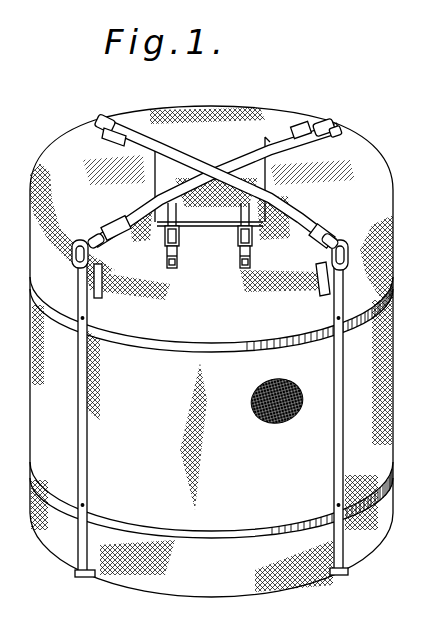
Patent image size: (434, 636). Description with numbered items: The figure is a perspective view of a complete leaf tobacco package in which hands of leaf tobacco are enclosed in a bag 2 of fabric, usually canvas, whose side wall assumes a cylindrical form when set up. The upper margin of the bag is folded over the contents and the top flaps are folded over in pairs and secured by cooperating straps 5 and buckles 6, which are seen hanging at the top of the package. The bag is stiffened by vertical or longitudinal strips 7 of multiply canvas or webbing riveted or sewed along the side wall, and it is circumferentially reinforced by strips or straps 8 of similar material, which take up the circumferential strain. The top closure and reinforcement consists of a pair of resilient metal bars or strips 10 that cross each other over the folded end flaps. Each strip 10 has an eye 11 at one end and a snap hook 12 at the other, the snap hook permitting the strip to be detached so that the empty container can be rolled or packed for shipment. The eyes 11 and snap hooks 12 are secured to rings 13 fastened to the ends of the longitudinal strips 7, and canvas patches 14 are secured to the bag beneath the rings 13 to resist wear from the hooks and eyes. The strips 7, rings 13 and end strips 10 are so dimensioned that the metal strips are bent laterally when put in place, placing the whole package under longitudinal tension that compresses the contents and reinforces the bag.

The bag 2 is at (211, 351).
The straps 5 is at (235, 213).
The buckles 6 is at (235, 236).
The longitudinal strips 7 is at (88, 443).
The circumferential straps 8 is at (246, 346).
The metal strips 10 is at (228, 166).
The eye 11 is at (108, 125).
The snap hook 12 is at (82, 238).
The rings 13 is at (330, 130).
The canvas patches 14 is at (110, 142).